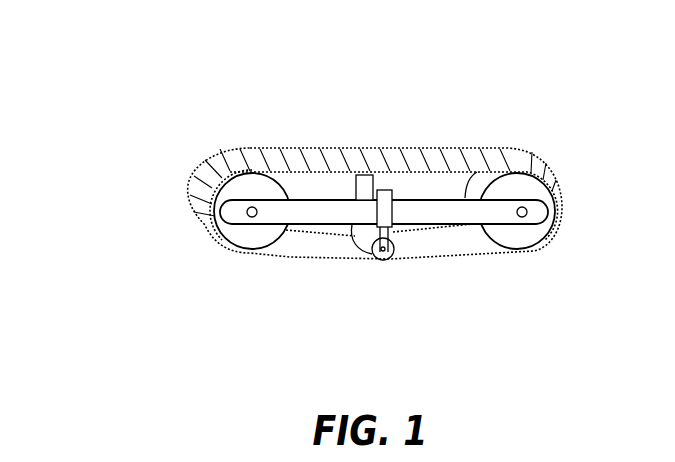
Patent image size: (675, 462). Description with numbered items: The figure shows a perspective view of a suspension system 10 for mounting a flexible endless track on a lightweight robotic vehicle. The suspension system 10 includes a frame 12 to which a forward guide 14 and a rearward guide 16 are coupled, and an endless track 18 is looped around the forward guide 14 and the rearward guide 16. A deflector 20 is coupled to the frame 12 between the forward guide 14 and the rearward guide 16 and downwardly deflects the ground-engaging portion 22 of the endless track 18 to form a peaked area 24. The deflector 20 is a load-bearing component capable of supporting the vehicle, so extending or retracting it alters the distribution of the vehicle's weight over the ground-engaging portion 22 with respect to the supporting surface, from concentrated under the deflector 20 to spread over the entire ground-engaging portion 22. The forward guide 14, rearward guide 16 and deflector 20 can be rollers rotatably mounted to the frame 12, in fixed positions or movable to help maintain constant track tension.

The suspension system 10 is at (100, 50).
The frame 12 is at (343, 212).
The forward guide 14 is at (237, 235).
The rearward guide 16 is at (530, 232).
The endless track 18 is at (499, 150).
The deflector 20 is at (368, 235).
The ground-engaging portion 22 is at (512, 277).
The peaked area 24 is at (400, 268).